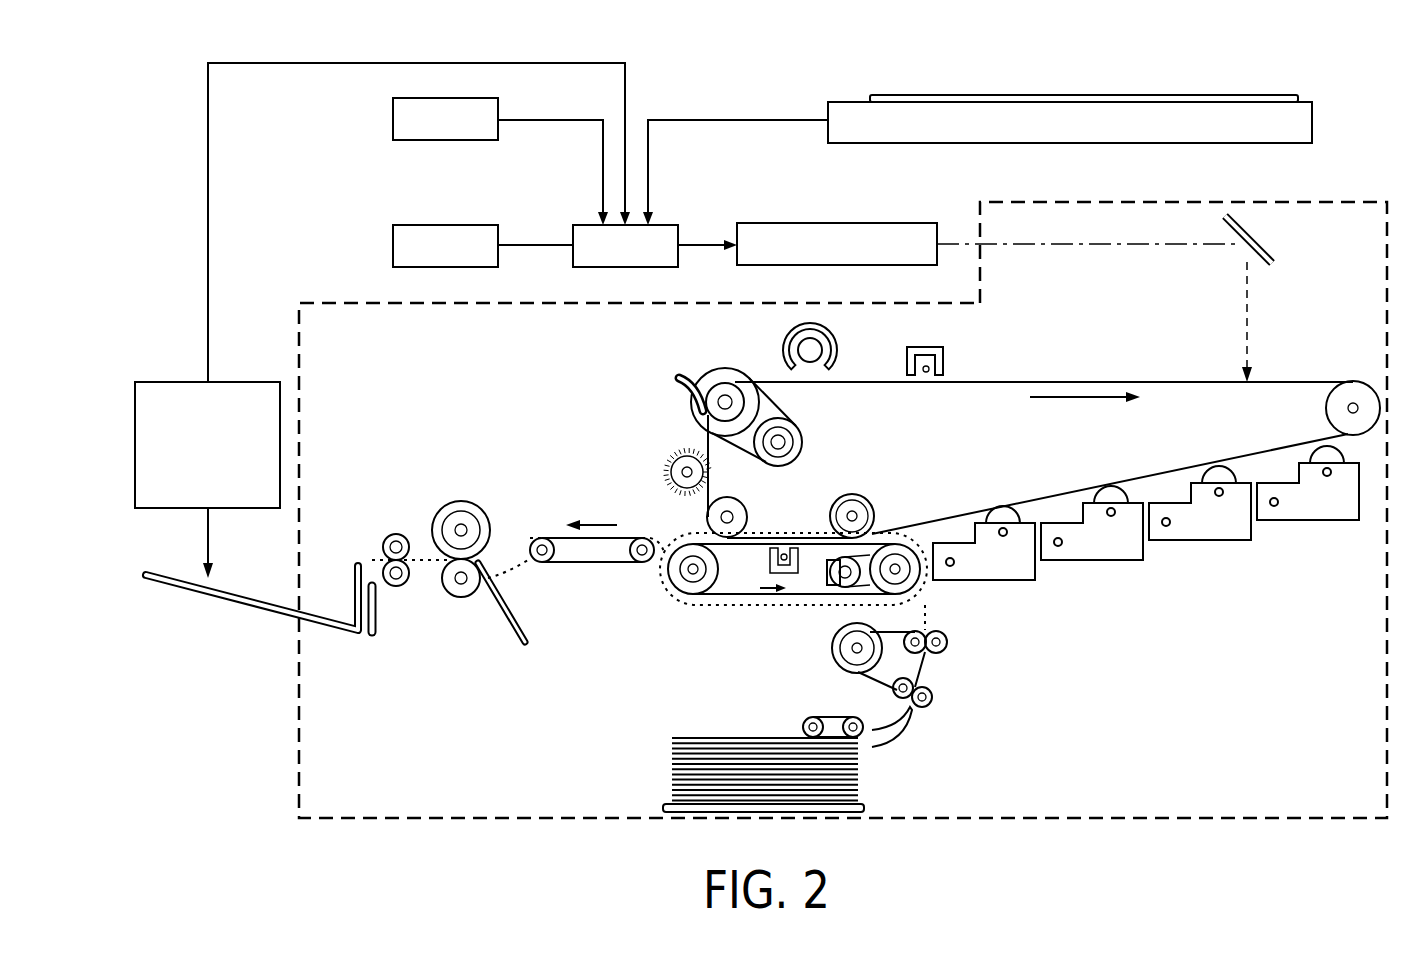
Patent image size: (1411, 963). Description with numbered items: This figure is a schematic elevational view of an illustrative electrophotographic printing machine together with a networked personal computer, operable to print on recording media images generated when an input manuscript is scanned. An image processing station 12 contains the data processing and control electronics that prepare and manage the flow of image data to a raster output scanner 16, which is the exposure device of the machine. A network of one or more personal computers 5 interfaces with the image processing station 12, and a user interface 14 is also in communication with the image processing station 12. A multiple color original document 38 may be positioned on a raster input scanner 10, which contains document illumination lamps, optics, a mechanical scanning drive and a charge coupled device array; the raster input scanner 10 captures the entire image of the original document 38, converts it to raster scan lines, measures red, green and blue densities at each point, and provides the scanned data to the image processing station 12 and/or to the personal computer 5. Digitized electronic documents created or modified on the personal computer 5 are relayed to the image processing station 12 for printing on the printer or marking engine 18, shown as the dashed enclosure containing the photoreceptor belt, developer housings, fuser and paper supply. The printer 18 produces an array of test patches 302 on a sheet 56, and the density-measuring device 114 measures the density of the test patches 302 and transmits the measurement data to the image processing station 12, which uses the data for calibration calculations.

The personal computer 5 is at (393, 120).
The user interface 14 is at (393, 245).
The image processing station 12 is at (580, 225).
The raster output scanner 16 is at (790, 223).
The raster input scanner 10 is at (808, 99).
The original document 38 is at (1200, 95).
The printer 18 is at (1362, 178).
The color-measuring device 114 is at (165, 382).
The test patches 302 is at (935, 524).
The sheet 56 is at (700, 738).